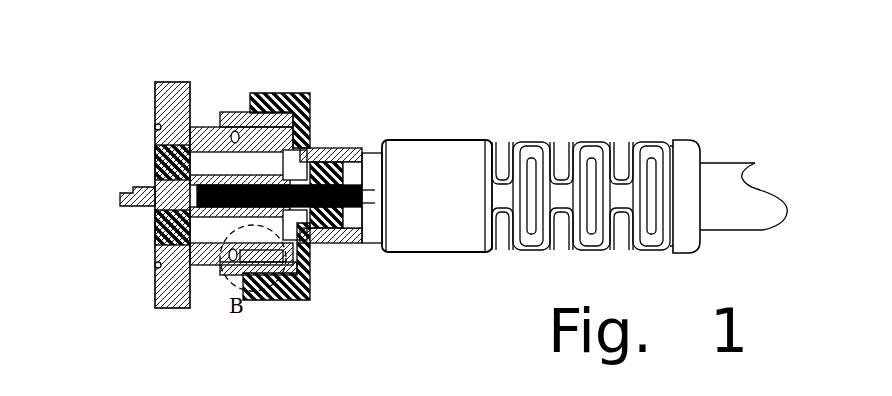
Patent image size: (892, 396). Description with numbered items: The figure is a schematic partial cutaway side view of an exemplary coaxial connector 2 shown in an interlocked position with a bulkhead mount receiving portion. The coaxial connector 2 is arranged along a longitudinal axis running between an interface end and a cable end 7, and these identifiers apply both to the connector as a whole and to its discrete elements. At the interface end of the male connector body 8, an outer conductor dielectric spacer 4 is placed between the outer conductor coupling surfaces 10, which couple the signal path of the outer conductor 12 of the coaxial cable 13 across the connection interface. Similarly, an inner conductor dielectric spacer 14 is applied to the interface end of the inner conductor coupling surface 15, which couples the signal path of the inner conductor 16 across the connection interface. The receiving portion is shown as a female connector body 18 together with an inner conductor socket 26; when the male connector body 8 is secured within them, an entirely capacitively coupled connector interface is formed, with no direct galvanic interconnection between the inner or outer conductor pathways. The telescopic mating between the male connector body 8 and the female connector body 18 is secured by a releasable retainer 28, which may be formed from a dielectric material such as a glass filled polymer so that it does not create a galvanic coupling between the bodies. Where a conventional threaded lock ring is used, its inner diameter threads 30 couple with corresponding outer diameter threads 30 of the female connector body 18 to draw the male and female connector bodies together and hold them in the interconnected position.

The coaxial connector 2 is at (342, 267).
The outer conductor dielectric spacer 4 is at (216, 134).
The cable end 7 is at (115, 187).
The male connector body 8 is at (332, 146).
The outer conductor coupling surfaces 10 is at (248, 137).
The outer conductor 12 is at (375, 138).
The coaxial cable 13 is at (724, 168).
The inner conductor dielectric spacer 14 is at (228, 207).
The inner conductor coupling surface 15 is at (157, 153).
The inner conductor 16 is at (357, 207).
The female connector body 18 is at (157, 92).
The inner conductor socket 26 is at (153, 235).
The releasable retainer 28 is at (307, 98).
The threads 30 is at (263, 97).